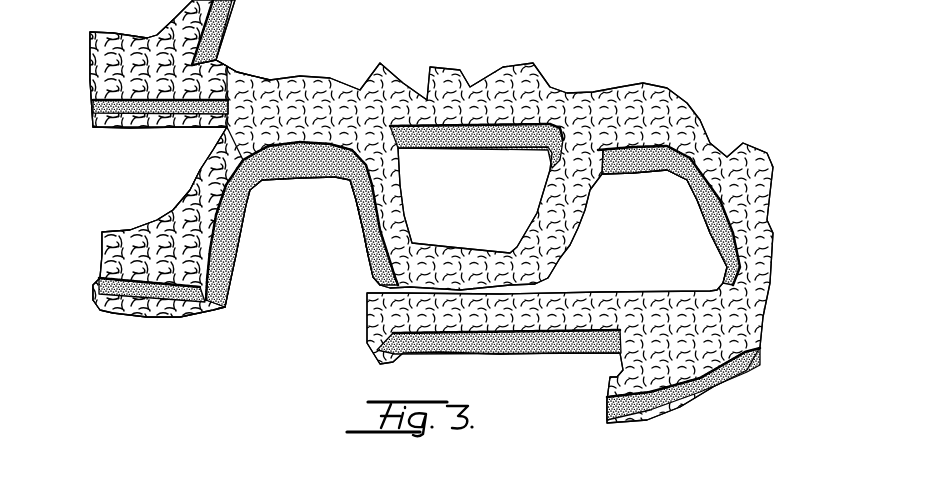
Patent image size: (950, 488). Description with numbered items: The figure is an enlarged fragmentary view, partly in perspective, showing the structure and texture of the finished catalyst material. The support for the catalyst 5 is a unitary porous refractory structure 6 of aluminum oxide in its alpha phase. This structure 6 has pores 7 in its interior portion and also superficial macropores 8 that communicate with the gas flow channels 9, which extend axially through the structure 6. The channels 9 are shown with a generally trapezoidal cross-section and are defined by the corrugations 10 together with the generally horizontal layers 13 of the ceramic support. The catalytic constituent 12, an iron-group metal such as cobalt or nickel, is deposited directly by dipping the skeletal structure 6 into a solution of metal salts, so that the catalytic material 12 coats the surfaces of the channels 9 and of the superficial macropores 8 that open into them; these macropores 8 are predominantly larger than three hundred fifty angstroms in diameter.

The catalyst 5 is at (170, 313).
The unitary porous refractory structure 6 is at (227, 263).
The pores 7 is at (275, 125).
The superficial macropores 8 is at (366, 188).
The gas flow channels 9 is at (657, 203).
The corrugations 10 is at (335, 267).
The catalytic constituent 12 is at (173, 200).
The horizontal layers 13 is at (343, 80).